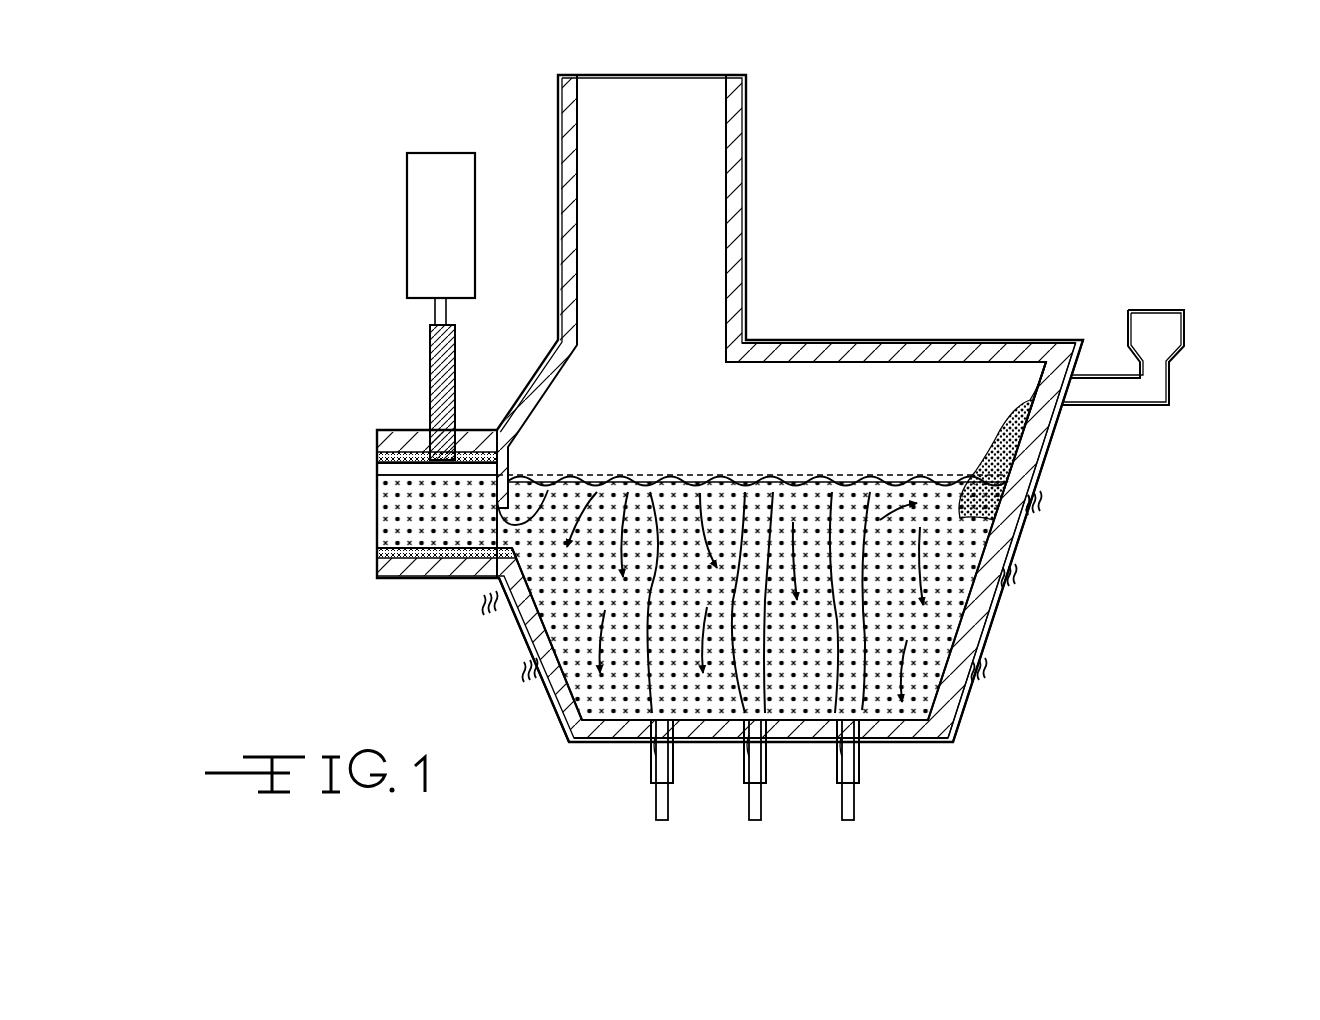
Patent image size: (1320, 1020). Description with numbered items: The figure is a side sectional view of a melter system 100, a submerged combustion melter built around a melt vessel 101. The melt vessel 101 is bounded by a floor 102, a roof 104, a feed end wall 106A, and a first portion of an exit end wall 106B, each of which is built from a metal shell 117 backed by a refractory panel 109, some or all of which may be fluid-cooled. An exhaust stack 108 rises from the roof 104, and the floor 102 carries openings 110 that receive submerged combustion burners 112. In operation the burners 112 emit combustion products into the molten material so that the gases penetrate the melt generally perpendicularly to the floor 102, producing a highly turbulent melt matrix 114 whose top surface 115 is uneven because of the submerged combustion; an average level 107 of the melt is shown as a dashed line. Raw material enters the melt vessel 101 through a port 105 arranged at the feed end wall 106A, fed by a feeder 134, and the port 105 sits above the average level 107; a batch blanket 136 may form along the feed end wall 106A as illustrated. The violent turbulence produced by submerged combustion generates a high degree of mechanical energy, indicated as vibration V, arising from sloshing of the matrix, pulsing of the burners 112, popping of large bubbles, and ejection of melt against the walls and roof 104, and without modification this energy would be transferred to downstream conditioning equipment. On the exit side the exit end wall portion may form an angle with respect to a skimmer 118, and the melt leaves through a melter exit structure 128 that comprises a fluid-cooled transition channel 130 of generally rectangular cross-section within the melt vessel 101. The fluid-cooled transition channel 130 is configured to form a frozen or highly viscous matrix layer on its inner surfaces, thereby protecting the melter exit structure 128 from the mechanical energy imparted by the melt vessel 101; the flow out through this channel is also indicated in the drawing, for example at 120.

The melter system 100 is at (1012, 180).
The melt vessel 101 is at (1045, 342).
The floor 102 is at (703, 745).
The roof 104 is at (792, 341).
The port 105 is at (1028, 390).
The feed end wall 106A is at (1015, 545).
The first portion of exit end wall 106B is at (530, 638).
The average level 107 is at (848, 470).
The exhaust stack 108 is at (748, 156).
The refractory panel 109 is at (375, 440).
The openings 110 is at (655, 762).
The submerged combustion burners 112 is at (652, 797).
The melt matrix 114 is at (930, 513).
The uneven top surface 115 is at (790, 470).
The metal shell 117 is at (395, 430).
The skimmer 118 is at (538, 470).
The flow passage 120 is at (522, 485).
The melter exit structure 128 is at (317, 410).
The fluid-cooled transition channel 130 is at (400, 582).
The feeder 134 is at (1185, 318).
The batch blanket 136 is at (1012, 441).
The vibration V is at (1036, 508).